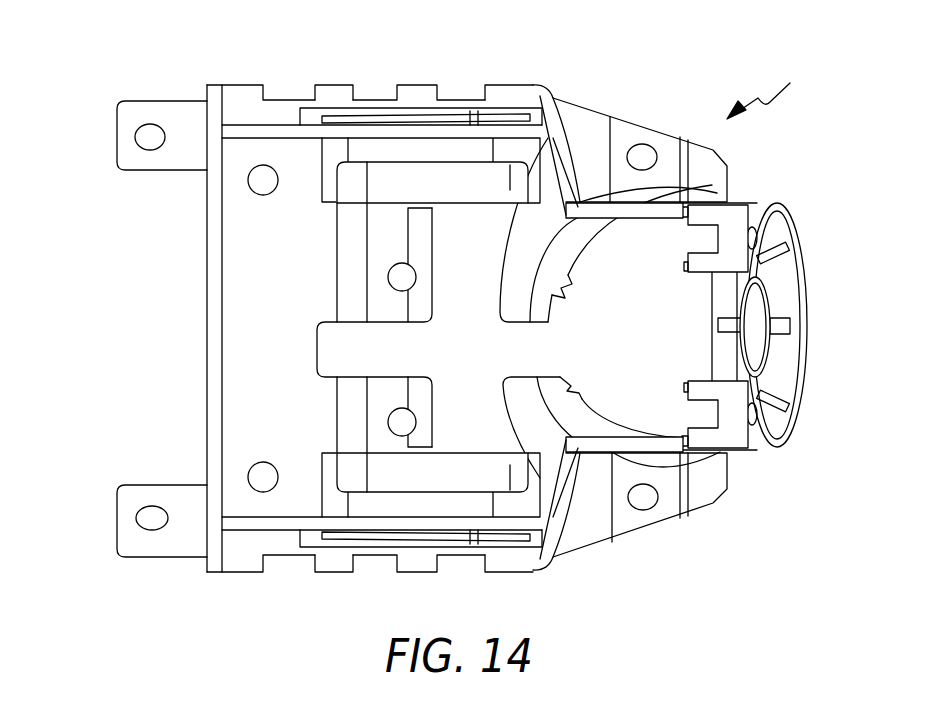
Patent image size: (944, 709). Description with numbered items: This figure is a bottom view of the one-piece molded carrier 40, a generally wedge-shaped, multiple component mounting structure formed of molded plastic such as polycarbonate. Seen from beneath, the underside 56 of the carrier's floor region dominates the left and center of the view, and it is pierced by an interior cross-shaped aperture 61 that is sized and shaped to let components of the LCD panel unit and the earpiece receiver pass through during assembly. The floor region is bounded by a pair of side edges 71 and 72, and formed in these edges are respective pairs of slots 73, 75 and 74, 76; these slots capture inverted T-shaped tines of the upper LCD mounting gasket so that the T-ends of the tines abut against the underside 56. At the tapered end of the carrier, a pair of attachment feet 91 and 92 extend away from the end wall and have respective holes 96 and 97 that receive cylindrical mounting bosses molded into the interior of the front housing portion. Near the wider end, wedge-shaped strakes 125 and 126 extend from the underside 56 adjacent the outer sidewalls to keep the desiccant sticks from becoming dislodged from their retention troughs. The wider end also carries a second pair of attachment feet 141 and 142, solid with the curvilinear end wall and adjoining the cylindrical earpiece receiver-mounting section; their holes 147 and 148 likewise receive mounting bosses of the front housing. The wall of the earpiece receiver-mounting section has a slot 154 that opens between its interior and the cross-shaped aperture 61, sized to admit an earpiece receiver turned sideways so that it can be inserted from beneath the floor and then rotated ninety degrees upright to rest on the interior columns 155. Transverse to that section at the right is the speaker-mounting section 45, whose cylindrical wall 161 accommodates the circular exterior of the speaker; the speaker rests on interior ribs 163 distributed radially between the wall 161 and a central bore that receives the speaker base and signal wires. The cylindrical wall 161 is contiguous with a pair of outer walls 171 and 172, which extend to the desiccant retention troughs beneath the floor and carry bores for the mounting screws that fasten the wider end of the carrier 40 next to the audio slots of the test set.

The carrier 40 is at (771, 90).
The speaker-mounting section 45 is at (800, 247).
The underside of the floor region 56 is at (250, 94).
The cross-shaped aperture 61 is at (325, 328).
The side edge 71 is at (332, 86).
The side edge 72 is at (332, 575).
The slot 73 is at (280, 95).
The slot 74 is at (283, 565).
The slot 75 is at (443, 97).
The slot 76 is at (455, 563).
The attachment foot 91 is at (120, 101).
The attachment foot 92 is at (135, 558).
The hole 96 is at (135, 137).
The hole 97 is at (152, 515).
The wedge-shaped strake 125 is at (533, 110).
The wedge-shaped strake 126 is at (530, 548).
The attachment foot 141 is at (630, 125).
The attachment foot 142 is at (668, 520).
The hole 147 is at (652, 160).
The hole 148 is at (640, 500).
The slot 154 is at (528, 355).
The interior column 155 is at (572, 290).
The cylindrical wall 161 is at (795, 435).
The interior rib 163 is at (806, 312).
The outer wall 171 is at (745, 205).
The outer wall 172 is at (755, 455).